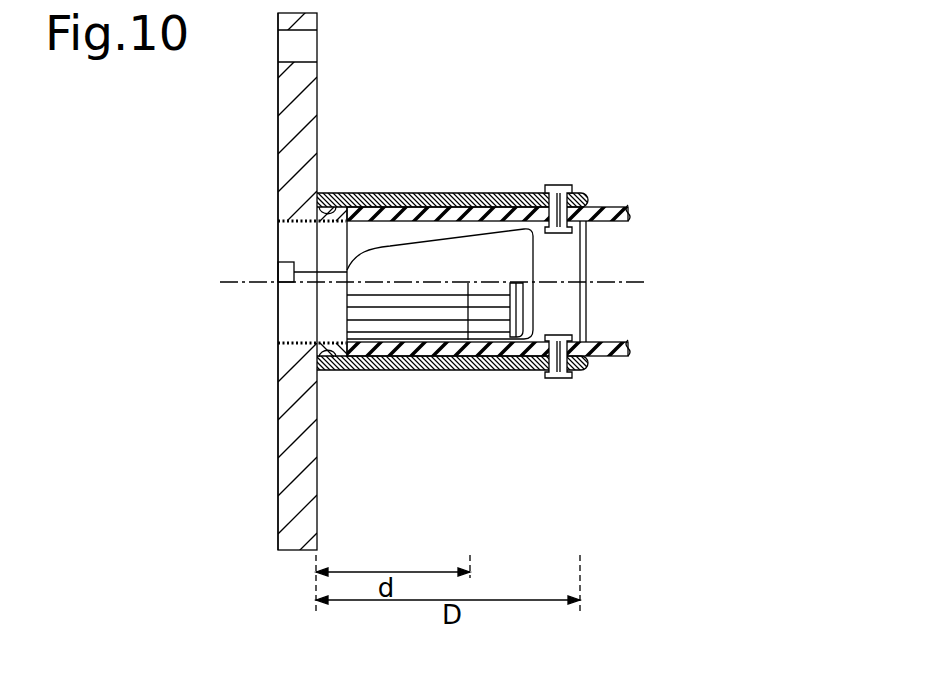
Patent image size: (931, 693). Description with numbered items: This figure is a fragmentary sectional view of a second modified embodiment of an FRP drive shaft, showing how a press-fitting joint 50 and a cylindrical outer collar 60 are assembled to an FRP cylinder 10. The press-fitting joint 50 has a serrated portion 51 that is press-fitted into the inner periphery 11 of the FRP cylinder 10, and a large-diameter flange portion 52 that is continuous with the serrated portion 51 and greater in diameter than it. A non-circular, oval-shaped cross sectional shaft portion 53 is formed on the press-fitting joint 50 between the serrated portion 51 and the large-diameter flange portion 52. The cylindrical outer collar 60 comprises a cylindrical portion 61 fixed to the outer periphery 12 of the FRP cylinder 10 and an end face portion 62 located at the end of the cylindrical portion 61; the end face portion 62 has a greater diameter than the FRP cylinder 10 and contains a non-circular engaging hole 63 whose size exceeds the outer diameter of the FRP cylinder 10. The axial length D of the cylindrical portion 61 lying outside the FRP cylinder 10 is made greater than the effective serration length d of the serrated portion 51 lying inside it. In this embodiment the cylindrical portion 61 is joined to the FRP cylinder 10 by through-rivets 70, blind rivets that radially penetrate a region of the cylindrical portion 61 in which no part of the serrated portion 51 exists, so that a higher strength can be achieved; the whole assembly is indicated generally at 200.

The FRP cylinder 10 is at (600, 203).
The inner periphery 11 is at (598, 356).
The outer periphery 12 is at (597, 356).
The press-fitting joint 50 is at (348, 45).
The serrated portion 51 is at (487, 328).
The large-diameter flange portion 52 is at (285, 107).
The non-circular cross sectional shaft portion 53 is at (336, 197).
The cylindrical outer collar 60 is at (453, 172).
The cylindrical portion 61 is at (405, 371).
The end face portion 62 is at (318, 356).
The non-circular engaging hole 63 is at (337, 372).
The through-rivets 70 is at (560, 186).
The sensor assembly 200 is at (578, 98).